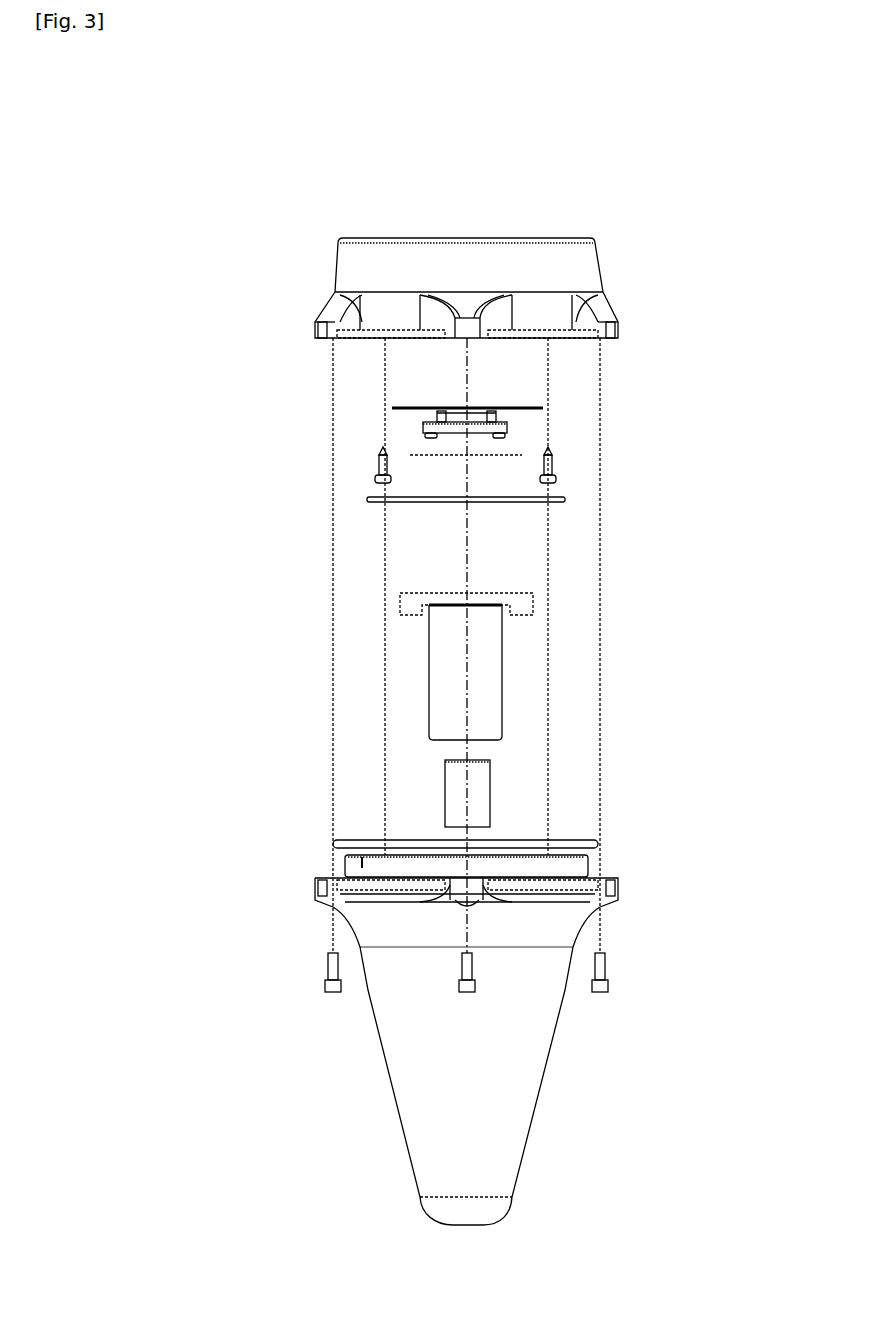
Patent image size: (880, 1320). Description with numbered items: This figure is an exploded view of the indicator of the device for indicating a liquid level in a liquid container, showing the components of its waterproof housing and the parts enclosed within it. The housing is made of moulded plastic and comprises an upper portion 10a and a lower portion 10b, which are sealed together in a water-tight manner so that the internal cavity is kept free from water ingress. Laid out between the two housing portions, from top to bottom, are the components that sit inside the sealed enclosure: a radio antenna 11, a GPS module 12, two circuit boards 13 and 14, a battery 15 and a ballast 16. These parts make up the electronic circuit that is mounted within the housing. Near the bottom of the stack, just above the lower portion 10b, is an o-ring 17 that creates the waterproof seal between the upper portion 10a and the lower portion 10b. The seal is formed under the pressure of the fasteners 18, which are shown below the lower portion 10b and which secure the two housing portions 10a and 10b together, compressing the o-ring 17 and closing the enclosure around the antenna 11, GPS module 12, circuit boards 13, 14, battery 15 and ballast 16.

The upper portion 10a is at (600, 270).
The lower portion 10b is at (548, 1073).
The radio antenna 11 is at (543, 408).
The GPS module 12 is at (508, 428).
The circuit board 13 is at (520, 455).
The circuit board 14 is at (557, 503).
The battery 15 is at (428, 651).
The ballast 16 is at (440, 792).
The o-ring 17 is at (335, 843).
The fasteners 18 is at (609, 965).